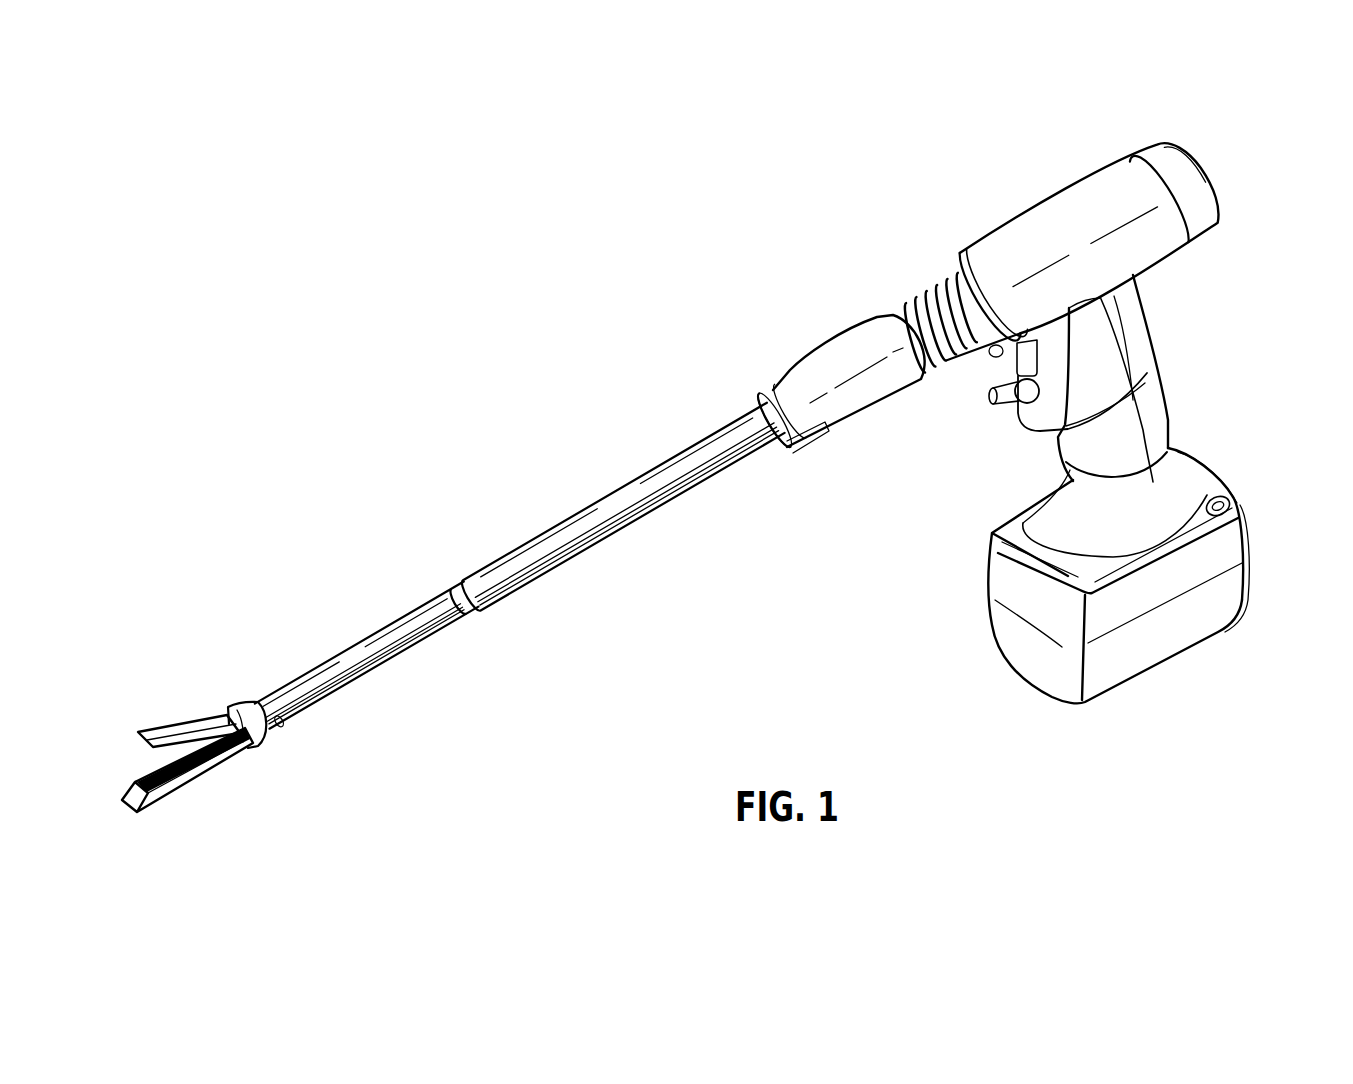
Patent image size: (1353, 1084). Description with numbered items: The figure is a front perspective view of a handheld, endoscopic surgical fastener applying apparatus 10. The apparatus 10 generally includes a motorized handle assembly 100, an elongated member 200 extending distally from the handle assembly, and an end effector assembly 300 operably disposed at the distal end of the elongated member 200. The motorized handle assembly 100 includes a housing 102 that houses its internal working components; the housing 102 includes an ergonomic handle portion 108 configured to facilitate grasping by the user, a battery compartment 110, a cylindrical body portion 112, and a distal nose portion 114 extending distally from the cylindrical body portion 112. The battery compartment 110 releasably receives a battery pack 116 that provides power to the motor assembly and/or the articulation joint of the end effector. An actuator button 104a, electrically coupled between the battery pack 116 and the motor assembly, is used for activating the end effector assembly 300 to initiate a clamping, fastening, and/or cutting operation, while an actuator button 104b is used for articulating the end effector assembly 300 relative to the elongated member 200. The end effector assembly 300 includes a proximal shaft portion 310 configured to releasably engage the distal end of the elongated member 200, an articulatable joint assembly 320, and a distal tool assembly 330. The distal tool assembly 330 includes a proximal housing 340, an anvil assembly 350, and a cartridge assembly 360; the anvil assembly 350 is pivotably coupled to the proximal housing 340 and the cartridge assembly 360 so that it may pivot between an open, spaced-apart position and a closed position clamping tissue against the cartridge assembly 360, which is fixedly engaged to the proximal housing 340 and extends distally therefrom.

The surgical fastener applying apparatus 10 is at (680, 278).
The motorized handle assembly 100 is at (1173, 368).
The housing 102 is at (1130, 324).
The actuator button 104a is at (998, 344).
The actuator button 104b is at (998, 403).
The handle portion 108 is at (1105, 447).
The battery compartment 110 is at (1170, 633).
The cylindrical body portion 112 is at (1050, 212).
The distal nose portion 114 is at (848, 347).
The battery pack 116 is at (1241, 540).
The elongated member 200 is at (571, 574).
The end effector assembly 300 is at (387, 563).
The proximal shaft portion 310 is at (368, 664).
The articulatable joint assembly 320 is at (275, 742).
The distal tool assembly 330 is at (317, 773).
The proximal housing 340 is at (245, 706).
The anvil assembly 350 is at (161, 733).
The cartridge assembly 360 is at (165, 788).